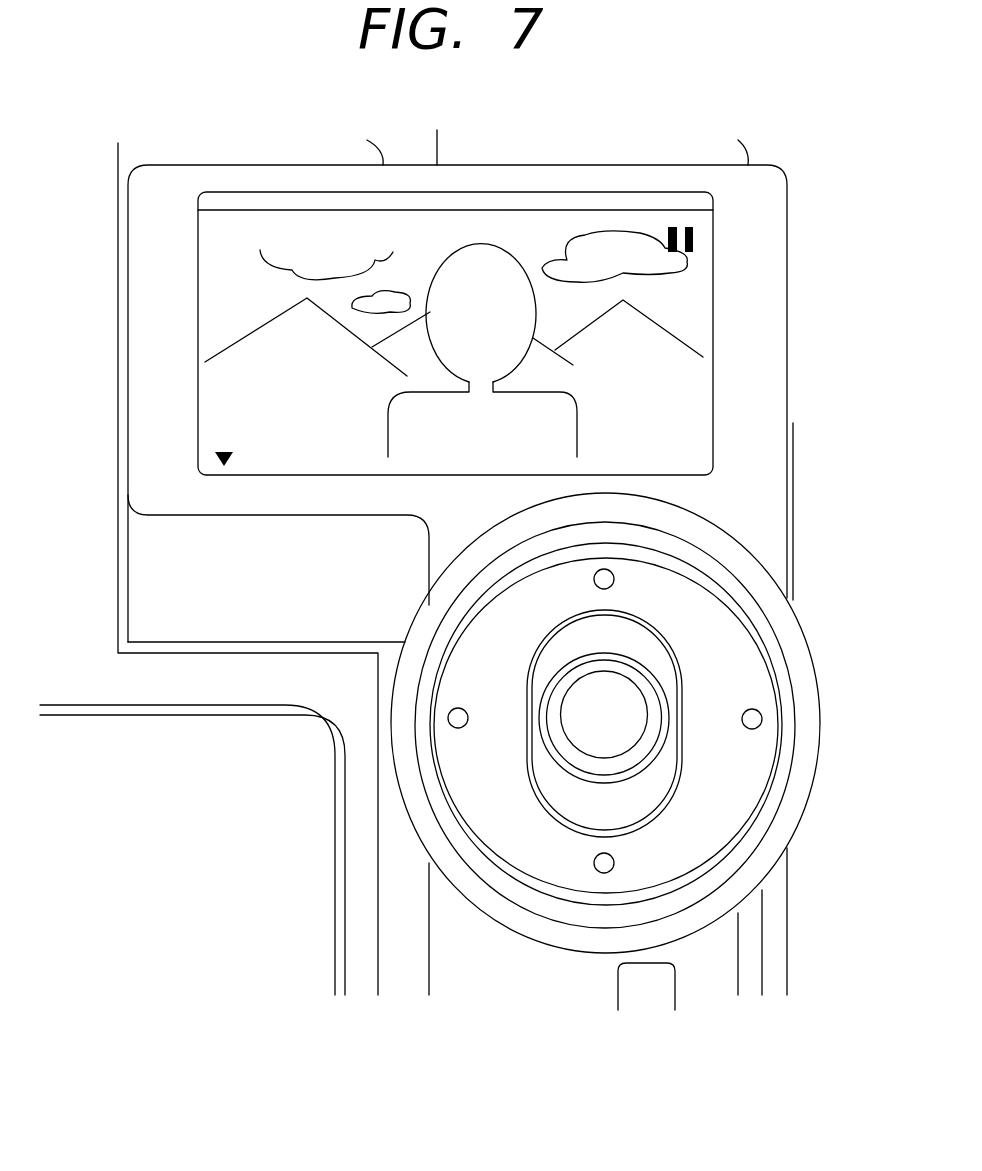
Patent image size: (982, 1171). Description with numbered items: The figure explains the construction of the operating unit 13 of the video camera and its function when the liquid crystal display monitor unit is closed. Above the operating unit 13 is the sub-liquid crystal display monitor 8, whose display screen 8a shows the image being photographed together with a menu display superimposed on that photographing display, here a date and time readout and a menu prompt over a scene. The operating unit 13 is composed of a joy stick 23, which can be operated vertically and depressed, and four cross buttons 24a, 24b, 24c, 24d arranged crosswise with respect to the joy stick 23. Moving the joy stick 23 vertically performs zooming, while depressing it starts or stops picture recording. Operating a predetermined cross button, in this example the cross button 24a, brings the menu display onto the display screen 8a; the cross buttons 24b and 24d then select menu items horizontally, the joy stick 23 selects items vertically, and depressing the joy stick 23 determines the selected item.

The liquid crystal display monitor 8 is at (760, 283).
The display screen 8a is at (702, 233).
The operating unit 13 is at (462, 828).
The joy stick 23 is at (613, 710).
The cross button 24a is at (614, 861).
The cross button 24b is at (449, 719).
The cross button 24c is at (613, 577).
The cross button 24d is at (761, 720).